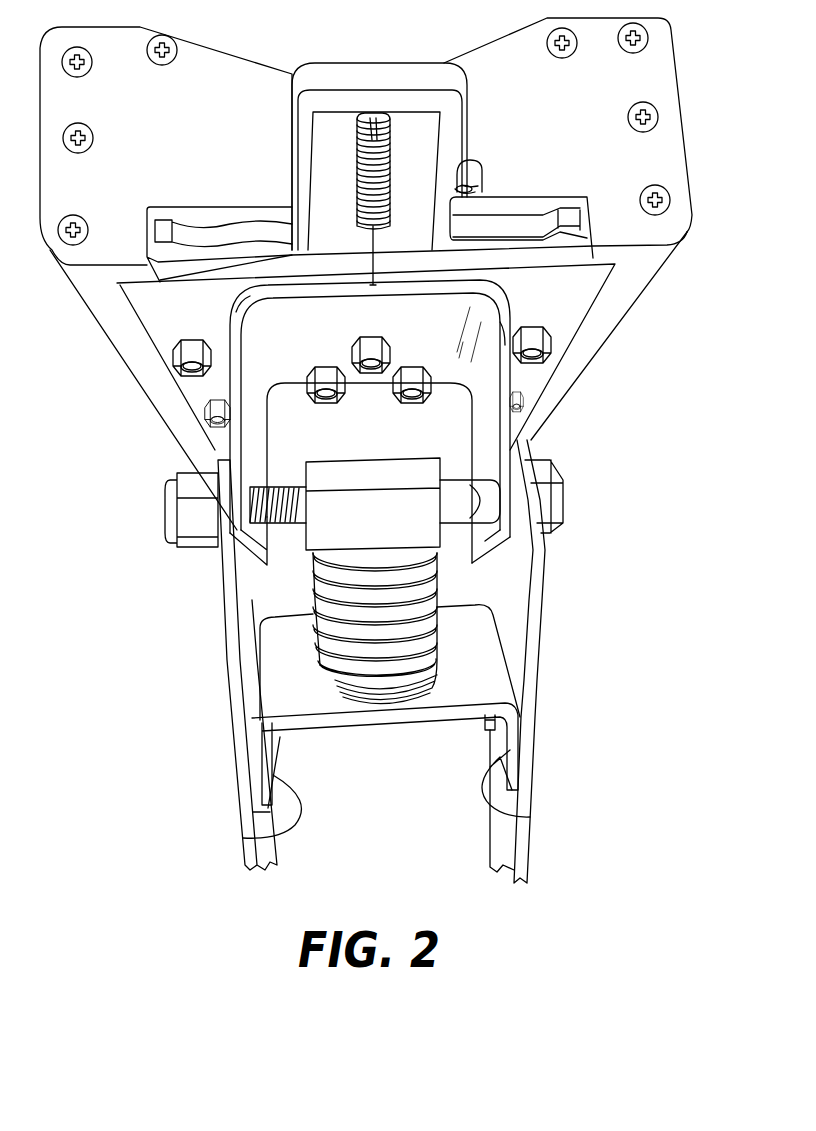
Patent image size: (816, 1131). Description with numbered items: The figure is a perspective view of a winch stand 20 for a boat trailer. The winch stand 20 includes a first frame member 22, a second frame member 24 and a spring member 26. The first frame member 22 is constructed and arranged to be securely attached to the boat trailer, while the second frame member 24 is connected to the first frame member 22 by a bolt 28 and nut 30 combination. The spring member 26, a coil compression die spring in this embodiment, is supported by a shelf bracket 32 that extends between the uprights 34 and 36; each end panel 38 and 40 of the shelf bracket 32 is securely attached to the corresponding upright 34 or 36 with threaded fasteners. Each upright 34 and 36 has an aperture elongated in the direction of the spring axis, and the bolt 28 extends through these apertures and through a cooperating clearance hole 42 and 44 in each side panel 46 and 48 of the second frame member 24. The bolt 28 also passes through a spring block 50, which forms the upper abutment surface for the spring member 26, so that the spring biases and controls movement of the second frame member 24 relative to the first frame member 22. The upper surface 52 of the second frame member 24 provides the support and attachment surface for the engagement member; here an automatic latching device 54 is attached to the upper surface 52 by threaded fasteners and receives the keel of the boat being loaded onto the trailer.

The winch stand 20 is at (150, 702).
The first frame member 22 is at (540, 608).
The second frame member 24 is at (230, 375).
The spring member 26 is at (340, 580).
The bolt 28 is at (481, 507).
The nut 30 is at (203, 523).
The shelf bracket 32 is at (337, 720).
The upright 34 is at (524, 668).
The upright 36 is at (232, 655).
The end panel 38 is at (503, 813).
The end panel 40 is at (243, 838).
The clearance hole 42 is at (480, 297).
The clearance hole 44 is at (267, 483).
The side panel 46 is at (502, 322).
The side panel 48 is at (240, 310).
The spring block 50 is at (413, 503).
The upper surface 52 is at (282, 288).
The automatic latching device 54 is at (658, 80).